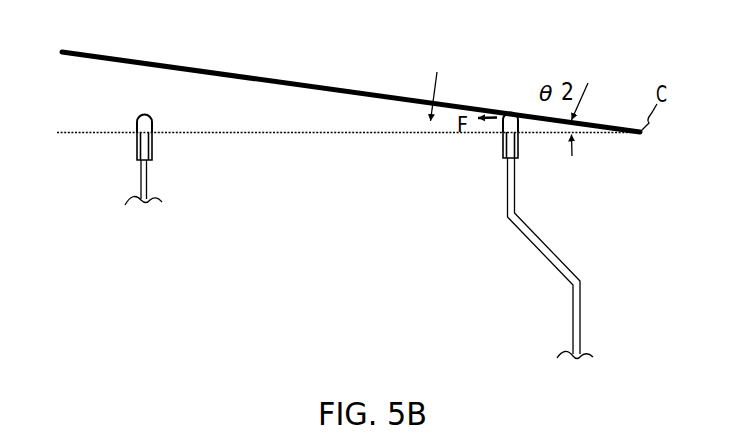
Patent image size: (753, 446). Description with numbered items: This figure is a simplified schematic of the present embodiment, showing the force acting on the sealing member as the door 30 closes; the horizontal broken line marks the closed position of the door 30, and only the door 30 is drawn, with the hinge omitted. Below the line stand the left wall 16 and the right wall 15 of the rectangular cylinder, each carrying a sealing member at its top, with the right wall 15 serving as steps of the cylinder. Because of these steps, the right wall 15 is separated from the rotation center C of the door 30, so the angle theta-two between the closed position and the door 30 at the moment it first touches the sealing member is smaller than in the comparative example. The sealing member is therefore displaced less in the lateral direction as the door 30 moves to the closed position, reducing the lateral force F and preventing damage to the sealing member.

The right wall 15 is at (516, 188).
The left wall 16 is at (148, 173).
The door 30 is at (337, 88).